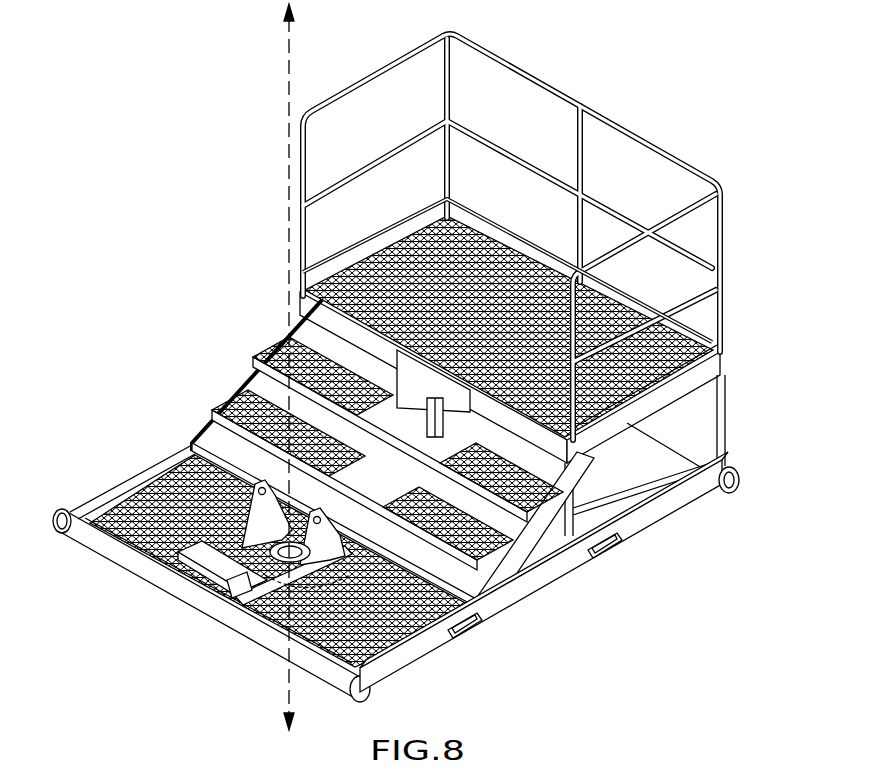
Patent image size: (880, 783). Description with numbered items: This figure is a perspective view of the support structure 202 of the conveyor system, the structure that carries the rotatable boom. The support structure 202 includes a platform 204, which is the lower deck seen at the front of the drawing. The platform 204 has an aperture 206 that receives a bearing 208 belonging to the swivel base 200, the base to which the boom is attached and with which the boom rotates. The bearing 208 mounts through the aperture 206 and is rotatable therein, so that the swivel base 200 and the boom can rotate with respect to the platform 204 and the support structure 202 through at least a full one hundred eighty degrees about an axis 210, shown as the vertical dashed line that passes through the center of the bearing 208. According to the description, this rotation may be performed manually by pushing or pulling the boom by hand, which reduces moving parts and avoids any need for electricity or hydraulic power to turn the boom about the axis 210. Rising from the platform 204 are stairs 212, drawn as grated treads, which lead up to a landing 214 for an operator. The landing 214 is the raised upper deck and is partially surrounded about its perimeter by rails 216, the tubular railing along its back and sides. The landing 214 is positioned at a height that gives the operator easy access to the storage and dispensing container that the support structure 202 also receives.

The swivel base 200 is at (177, 480).
The support structure 202 is at (187, 390).
The platform 204 is at (133, 530).
The aperture 206 is at (300, 628).
The bearing 208 is at (383, 613).
The axis 210 is at (288, 78).
The stairs 212 is at (533, 480).
The landing 214 is at (723, 347).
The rails 216 is at (687, 166).